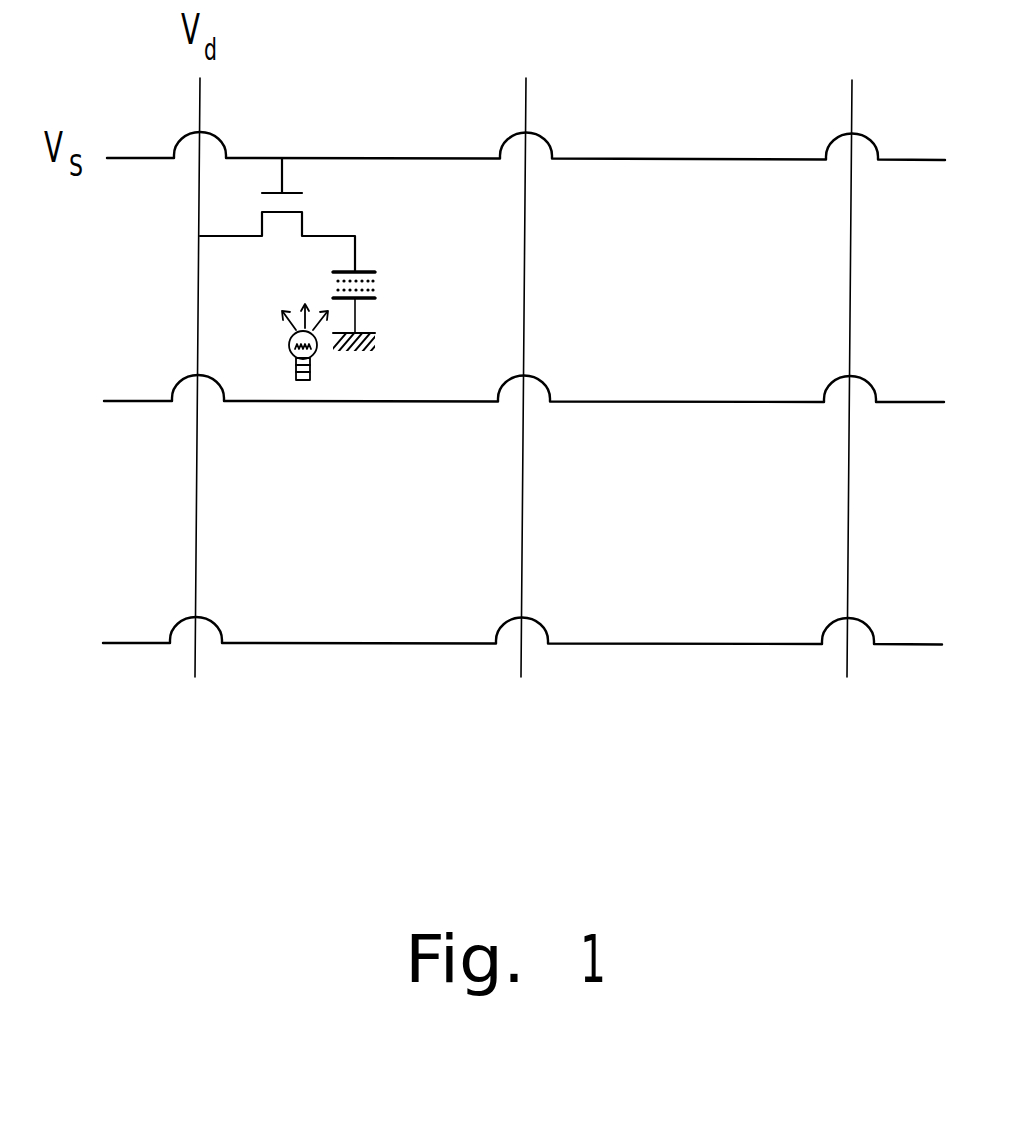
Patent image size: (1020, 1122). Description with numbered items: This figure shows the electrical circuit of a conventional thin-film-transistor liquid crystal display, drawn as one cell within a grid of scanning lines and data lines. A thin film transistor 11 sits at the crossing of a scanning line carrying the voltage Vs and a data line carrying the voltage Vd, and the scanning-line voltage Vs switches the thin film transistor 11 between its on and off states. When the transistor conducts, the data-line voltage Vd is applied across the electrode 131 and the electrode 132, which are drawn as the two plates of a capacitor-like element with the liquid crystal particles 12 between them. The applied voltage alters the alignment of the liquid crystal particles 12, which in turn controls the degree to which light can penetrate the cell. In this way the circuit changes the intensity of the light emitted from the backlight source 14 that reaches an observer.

The thin film transistor 11 is at (303, 203).
The liquid crystal particles 12 is at (378, 283).
The electrode 131 is at (365, 272).
The electrode 132 is at (373, 299).
The backlight source 14 is at (297, 368).